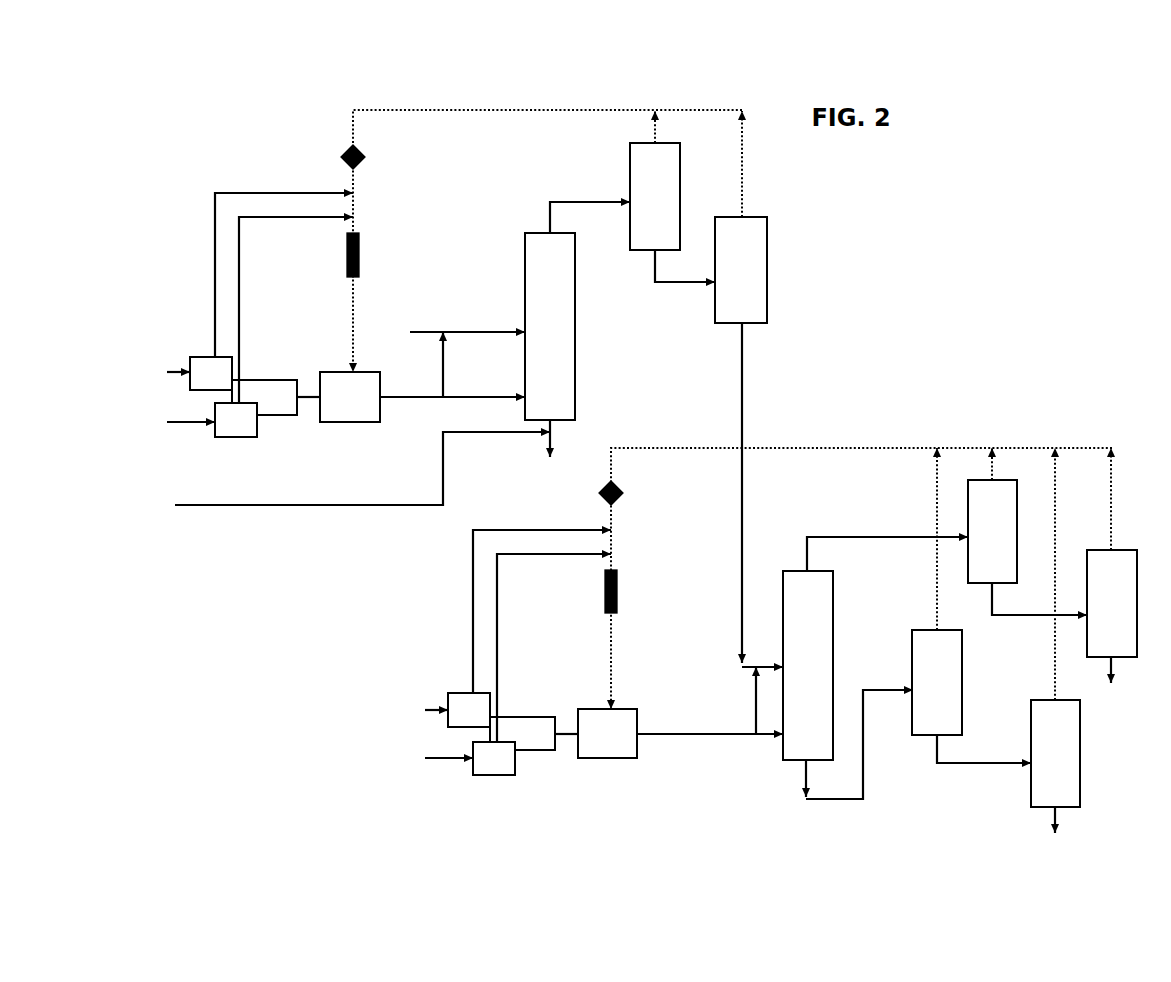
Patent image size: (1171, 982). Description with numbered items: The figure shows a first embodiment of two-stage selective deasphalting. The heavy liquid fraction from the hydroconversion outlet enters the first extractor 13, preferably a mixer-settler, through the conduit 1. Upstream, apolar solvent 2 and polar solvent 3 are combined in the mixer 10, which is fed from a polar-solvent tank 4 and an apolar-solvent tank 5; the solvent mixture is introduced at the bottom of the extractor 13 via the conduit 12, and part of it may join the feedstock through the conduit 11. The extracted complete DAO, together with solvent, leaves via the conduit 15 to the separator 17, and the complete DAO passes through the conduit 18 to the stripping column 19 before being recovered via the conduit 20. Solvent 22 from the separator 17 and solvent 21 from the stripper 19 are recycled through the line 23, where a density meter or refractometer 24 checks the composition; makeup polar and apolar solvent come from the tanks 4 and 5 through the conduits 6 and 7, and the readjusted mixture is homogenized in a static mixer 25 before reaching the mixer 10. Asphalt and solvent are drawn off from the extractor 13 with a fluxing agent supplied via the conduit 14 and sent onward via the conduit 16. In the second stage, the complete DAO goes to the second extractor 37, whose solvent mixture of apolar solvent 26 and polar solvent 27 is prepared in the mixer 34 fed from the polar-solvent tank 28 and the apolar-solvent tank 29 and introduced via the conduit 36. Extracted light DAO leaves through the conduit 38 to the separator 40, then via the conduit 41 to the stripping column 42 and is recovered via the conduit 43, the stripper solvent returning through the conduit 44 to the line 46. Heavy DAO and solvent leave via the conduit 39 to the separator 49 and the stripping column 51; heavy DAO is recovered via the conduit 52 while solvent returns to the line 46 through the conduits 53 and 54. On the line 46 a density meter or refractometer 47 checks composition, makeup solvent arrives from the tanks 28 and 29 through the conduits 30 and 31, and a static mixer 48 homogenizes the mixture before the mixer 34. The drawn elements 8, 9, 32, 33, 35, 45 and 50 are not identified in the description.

The conduit 1 is at (478, 328).
The apolar solvent 2 is at (182, 365).
The polar solvent 3 is at (190, 422).
The tank 4 is at (255, 438).
The tank 5 is at (200, 355).
The conduit 6 is at (240, 303).
The conduit 7 is at (215, 293).
The unit 8 is at (282, 378).
The unit 9 is at (280, 415).
The mixer 10 is at (370, 422).
The conduit 11 is at (442, 377).
The conduit 12 is at (468, 398).
The first extractor 13 is at (577, 327).
The conduit 14 is at (360, 508).
The conduit 15 is at (602, 197).
The conduit 16 is at (552, 456).
The separator 17 is at (682, 198).
The conduit 18 is at (673, 285).
The stripping column 19 is at (767, 270).
The conduit 20 is at (740, 327).
The solvent 21 is at (742, 172).
The solvent 22 is at (657, 132).
The line 23 is at (575, 108).
The density meter or refractometer 24 is at (363, 157).
The static-type mixer 25 is at (360, 253).
The apolar solvent 26 is at (432, 700).
The polar solvent 27 is at (447, 762).
The tank 28 is at (497, 775).
The tank 29 is at (458, 690).
The conduit 30 is at (500, 640).
The conduit 31 is at (472, 633).
The unit 32 is at (538, 717).
The unit 33 is at (538, 750).
The mixer 34 is at (630, 760).
The line 35 is at (753, 715).
The conduit 36 is at (765, 738).
The second extractor 37 is at (833, 663).
The conduit 38 is at (855, 535).
The conduit 39 is at (863, 748).
The separator 40 is at (1018, 530).
The conduit 41 is at (1027, 617).
The stripping column 42 is at (1135, 603).
The conduit 43 is at (1113, 663).
The conduit 44 is at (1112, 508).
The gas line 45 is at (993, 470).
The line 46 is at (832, 447).
The density meter or refractometer 47 is at (622, 497).
The static-type mixer 48 is at (618, 592).
The separator 49 is at (963, 683).
The line 50 is at (963, 767).
The stripping column 51 is at (1080, 745).
The conduit 52 is at (1057, 810).
The conduit 53 is at (937, 615).
The conduit 54 is at (1057, 528).